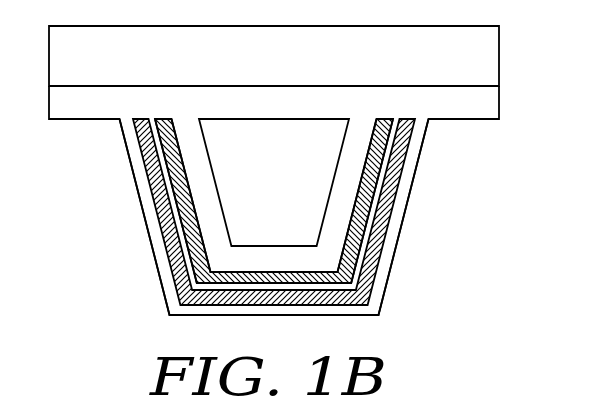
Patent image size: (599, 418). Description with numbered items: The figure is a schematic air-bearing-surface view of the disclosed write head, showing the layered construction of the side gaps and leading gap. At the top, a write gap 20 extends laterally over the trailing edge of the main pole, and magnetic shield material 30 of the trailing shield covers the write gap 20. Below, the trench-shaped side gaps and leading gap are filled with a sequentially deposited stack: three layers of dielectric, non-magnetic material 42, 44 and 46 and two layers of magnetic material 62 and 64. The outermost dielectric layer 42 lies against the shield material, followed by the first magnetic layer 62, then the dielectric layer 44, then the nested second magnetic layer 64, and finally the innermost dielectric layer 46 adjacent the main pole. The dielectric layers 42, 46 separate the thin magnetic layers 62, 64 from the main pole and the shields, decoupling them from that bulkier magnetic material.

The write gap 20 is at (480, 100).
The magnetic shield material 30 is at (480, 60).
The dielectric layer 42 is at (408, 172).
The dielectric layer 44 is at (175, 210).
The dielectric layer 46 is at (347, 202).
The magnetic layer 62 is at (380, 250).
The magnetic layer 64 is at (388, 143).